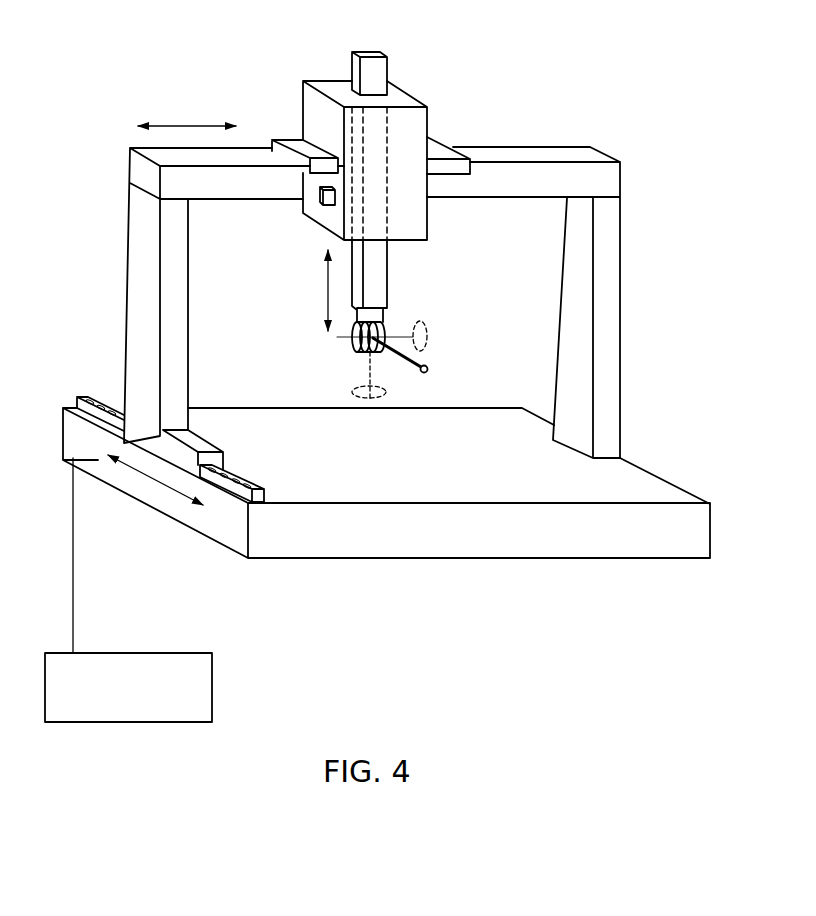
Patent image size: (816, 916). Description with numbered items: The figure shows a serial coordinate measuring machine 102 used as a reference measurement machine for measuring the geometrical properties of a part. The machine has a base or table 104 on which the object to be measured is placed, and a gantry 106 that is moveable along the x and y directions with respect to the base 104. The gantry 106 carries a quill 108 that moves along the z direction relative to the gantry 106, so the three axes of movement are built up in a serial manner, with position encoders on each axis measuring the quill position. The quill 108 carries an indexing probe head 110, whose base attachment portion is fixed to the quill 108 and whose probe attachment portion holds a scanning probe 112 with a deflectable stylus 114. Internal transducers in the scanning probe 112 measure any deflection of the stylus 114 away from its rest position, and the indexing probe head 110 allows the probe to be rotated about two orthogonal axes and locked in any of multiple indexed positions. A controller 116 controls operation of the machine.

The serial coordinate measuring machine 102 is at (386, 329).
The base or table 104 is at (371, 560).
The gantry 106 is at (587, 156).
The quill 108 is at (380, 292).
The indexing probe head 110 is at (347, 347).
The scanning probe 112 is at (433, 372).
The deflectable stylus 114 is at (404, 368).
The controller 116 is at (148, 701).